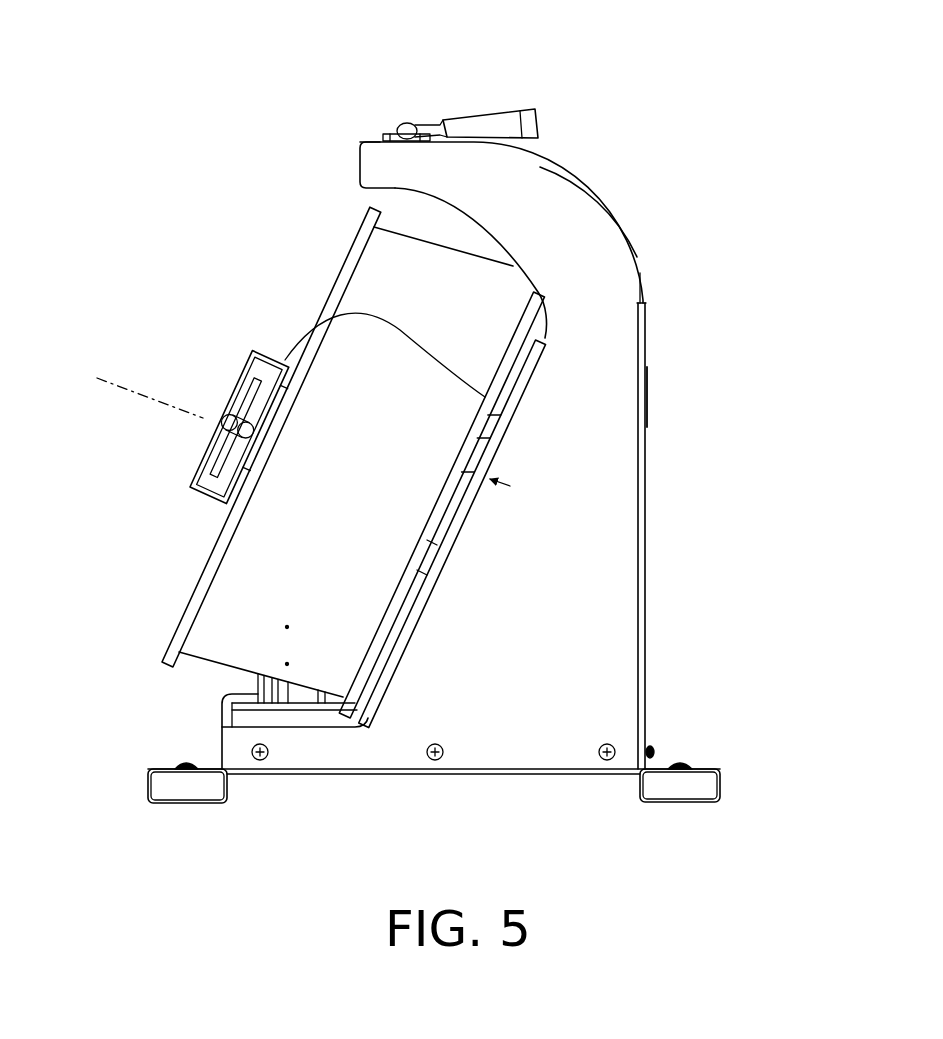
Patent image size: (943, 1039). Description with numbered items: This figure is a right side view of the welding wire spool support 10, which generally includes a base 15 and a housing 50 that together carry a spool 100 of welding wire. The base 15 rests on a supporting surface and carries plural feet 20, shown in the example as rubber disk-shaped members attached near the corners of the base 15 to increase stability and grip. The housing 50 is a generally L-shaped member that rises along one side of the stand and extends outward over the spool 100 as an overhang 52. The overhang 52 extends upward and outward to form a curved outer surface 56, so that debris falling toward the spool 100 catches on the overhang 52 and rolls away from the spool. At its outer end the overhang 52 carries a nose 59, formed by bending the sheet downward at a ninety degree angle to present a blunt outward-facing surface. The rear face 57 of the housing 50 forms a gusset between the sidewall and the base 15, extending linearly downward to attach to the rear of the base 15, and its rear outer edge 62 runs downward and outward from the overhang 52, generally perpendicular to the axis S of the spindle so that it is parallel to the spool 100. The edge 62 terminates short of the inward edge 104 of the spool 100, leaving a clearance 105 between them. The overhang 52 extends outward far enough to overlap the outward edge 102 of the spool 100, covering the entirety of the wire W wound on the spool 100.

The welding wire spool support 10 is at (521, 86).
The base 15 is at (406, 773).
The feet 20 is at (184, 803).
The housing 50 is at (560, 147).
The overhang 52 is at (388, 164).
The curved outer surface 56 is at (617, 215).
The rear face 57 is at (607, 492).
The nose 59 is at (358, 166).
The rear outer edge 62 is at (430, 537).
The spool 100 is at (309, 288).
The outward edge 102 is at (351, 211).
The inward edge 104 is at (290, 361).
The clearance 105 is at (453, 462).
The axis S is at (133, 393).
The wire W is at (425, 255).